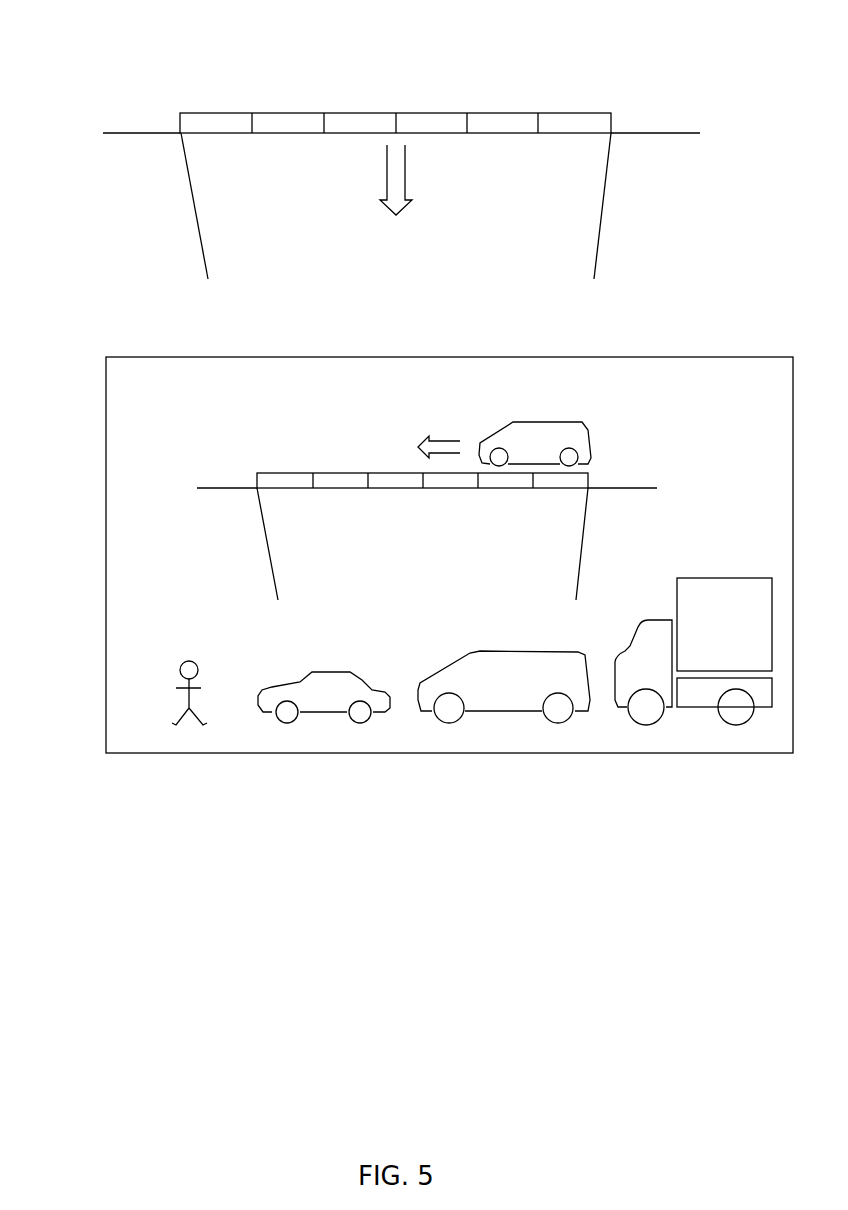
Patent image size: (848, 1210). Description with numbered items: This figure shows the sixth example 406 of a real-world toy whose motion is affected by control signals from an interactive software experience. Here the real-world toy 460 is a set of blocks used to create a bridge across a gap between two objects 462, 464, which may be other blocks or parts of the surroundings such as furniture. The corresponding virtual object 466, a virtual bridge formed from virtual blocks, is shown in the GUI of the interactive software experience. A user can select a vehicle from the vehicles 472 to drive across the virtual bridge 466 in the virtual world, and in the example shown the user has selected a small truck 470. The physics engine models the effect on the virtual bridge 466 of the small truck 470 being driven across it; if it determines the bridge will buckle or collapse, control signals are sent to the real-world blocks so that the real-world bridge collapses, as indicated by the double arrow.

The sixth example 406 is at (82, 55).
The real-world toy 460 is at (212, 113).
The object 462 is at (173, 206).
The object 464 is at (627, 206).
The virtual object 466 is at (280, 473).
The small truck 470 is at (527, 422).
The vehicles 472 is at (100, 645).